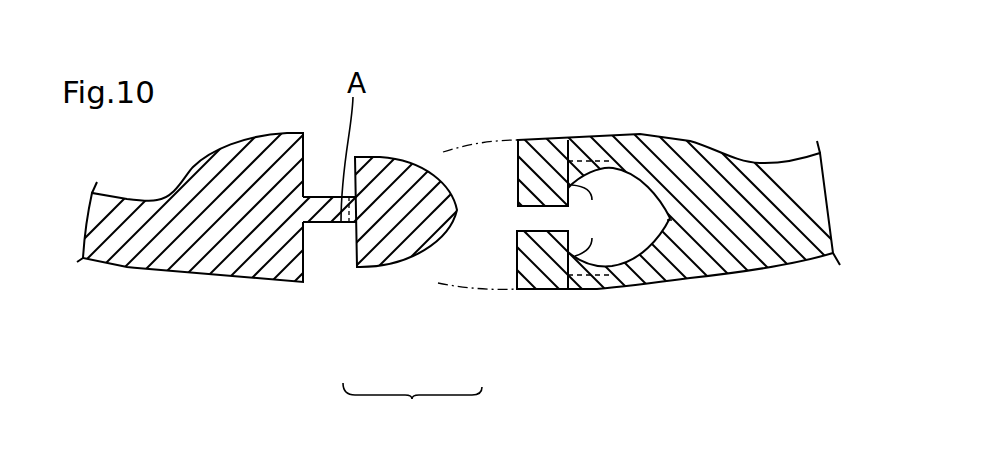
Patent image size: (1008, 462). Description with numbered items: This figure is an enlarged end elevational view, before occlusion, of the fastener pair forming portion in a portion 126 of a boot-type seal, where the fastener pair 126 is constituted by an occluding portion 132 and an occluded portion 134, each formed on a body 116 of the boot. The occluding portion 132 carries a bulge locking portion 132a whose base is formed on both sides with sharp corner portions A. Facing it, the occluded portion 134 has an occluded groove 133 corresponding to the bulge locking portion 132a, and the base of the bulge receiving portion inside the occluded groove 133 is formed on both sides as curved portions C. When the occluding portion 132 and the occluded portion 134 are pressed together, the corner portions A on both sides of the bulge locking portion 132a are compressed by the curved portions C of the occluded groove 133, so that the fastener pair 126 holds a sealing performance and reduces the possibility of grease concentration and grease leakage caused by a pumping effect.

The frame member 116 is at (107, 243).
The fastener pair 126 is at (412, 411).
The occluding portion 132 is at (325, 223).
The bulge locking portion 132a is at (397, 167).
The occluded groove 133 is at (548, 214).
The occluded portion 134 is at (519, 156).